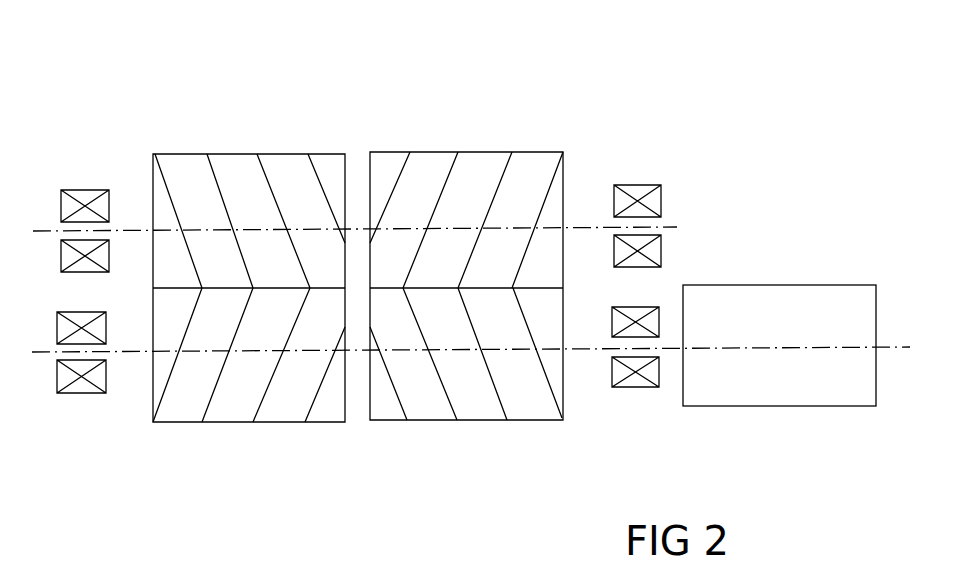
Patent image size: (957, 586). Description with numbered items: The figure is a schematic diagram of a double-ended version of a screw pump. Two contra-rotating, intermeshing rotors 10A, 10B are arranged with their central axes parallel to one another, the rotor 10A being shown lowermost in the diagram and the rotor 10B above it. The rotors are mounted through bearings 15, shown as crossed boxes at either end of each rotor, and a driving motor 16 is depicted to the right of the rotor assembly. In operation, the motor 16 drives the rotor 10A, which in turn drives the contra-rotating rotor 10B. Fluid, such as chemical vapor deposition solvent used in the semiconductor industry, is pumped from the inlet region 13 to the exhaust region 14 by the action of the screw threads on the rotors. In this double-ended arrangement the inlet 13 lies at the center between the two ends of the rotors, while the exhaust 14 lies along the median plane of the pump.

The rotor 10A is at (562, 420).
The rotor 10B is at (564, 153).
The inlet region 13 is at (358, 282).
The exhaust region 14 is at (362, 291).
The bearings 15 is at (661, 185).
The driving motor 16 is at (761, 393).